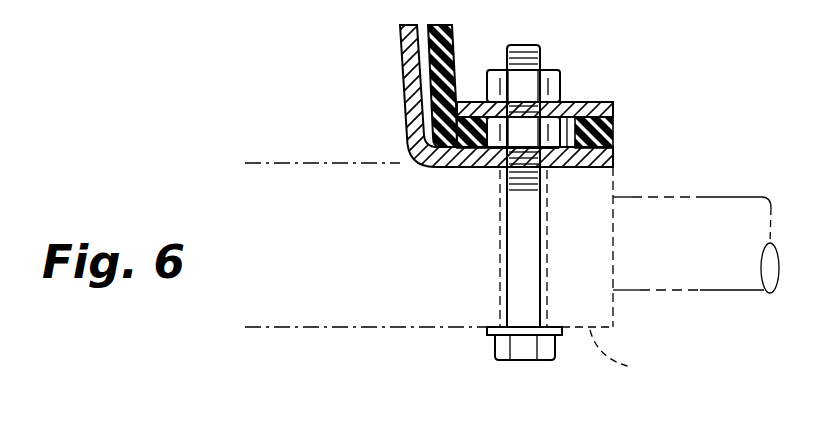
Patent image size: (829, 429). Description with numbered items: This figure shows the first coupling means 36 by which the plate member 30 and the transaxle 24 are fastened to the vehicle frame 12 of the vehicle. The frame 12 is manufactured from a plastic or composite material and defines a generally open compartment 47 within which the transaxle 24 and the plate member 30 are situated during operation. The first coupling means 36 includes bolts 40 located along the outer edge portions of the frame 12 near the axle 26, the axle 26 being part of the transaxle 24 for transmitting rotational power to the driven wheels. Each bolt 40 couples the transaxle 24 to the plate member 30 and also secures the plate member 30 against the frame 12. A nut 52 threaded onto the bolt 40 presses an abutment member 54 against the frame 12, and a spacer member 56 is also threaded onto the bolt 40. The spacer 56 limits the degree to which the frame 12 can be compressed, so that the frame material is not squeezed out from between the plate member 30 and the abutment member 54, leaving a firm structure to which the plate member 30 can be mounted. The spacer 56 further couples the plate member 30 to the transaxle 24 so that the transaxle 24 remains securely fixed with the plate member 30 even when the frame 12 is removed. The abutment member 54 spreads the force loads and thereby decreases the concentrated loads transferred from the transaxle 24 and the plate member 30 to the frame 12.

The frame 12 is at (453, 53).
The transaxle 24 is at (629, 349).
The axle 26 is at (706, 222).
The plate member 30 is at (613, 160).
The first coupling means 36 is at (682, 125).
The bolt 40 is at (495, 348).
The compartment 47 is at (415, 123).
The nut 52 is at (555, 73).
The abutment member 54 is at (615, 107).
The spacer member 56 is at (565, 107).